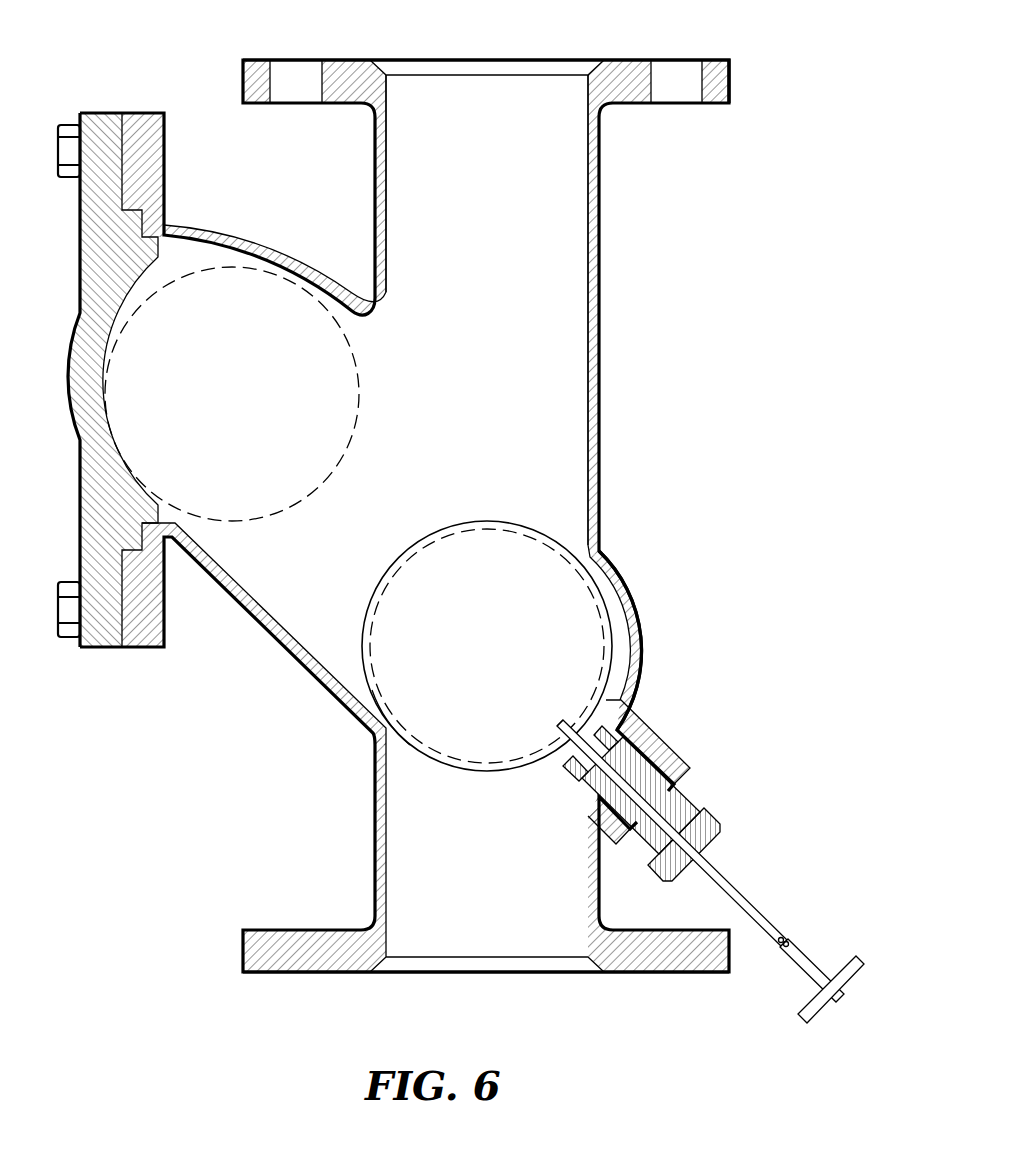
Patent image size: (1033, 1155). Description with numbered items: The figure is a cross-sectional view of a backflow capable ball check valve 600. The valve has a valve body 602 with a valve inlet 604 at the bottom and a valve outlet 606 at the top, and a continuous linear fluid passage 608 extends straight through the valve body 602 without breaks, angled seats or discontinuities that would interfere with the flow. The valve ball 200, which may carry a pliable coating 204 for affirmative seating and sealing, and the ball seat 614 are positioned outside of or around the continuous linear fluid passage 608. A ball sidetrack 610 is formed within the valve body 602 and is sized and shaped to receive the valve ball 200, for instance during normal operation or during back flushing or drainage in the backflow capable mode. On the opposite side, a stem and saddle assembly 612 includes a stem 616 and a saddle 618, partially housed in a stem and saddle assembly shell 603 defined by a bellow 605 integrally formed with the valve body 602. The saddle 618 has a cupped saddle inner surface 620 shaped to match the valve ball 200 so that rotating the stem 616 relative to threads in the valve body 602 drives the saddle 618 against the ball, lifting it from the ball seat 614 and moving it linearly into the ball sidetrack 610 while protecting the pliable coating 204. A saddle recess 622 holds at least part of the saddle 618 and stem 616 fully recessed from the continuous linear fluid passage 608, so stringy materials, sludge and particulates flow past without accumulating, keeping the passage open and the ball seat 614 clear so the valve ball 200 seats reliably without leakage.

The backflow capable ball check valve 600 is at (690, 373).
The valve body 602 is at (598, 308).
The stem and saddle assembly shell 603 is at (666, 787).
The valve inlet 604 is at (555, 962).
The bellow 605 is at (637, 612).
The valve outlet 606 is at (568, 70).
The continuous linear fluid passage 608 is at (560, 229).
The ball sidetrack 610 is at (272, 634).
The stem and saddle assembly 612 is at (775, 905).
The ball seat 614 is at (380, 712).
The stem 616 is at (773, 930).
The saddle 618 is at (562, 770).
The saddle inner surface 620 is at (566, 745).
The saddle recess 622 is at (566, 768).
The valve ball 200 is at (378, 580).
The pliable coating 204 is at (456, 522).